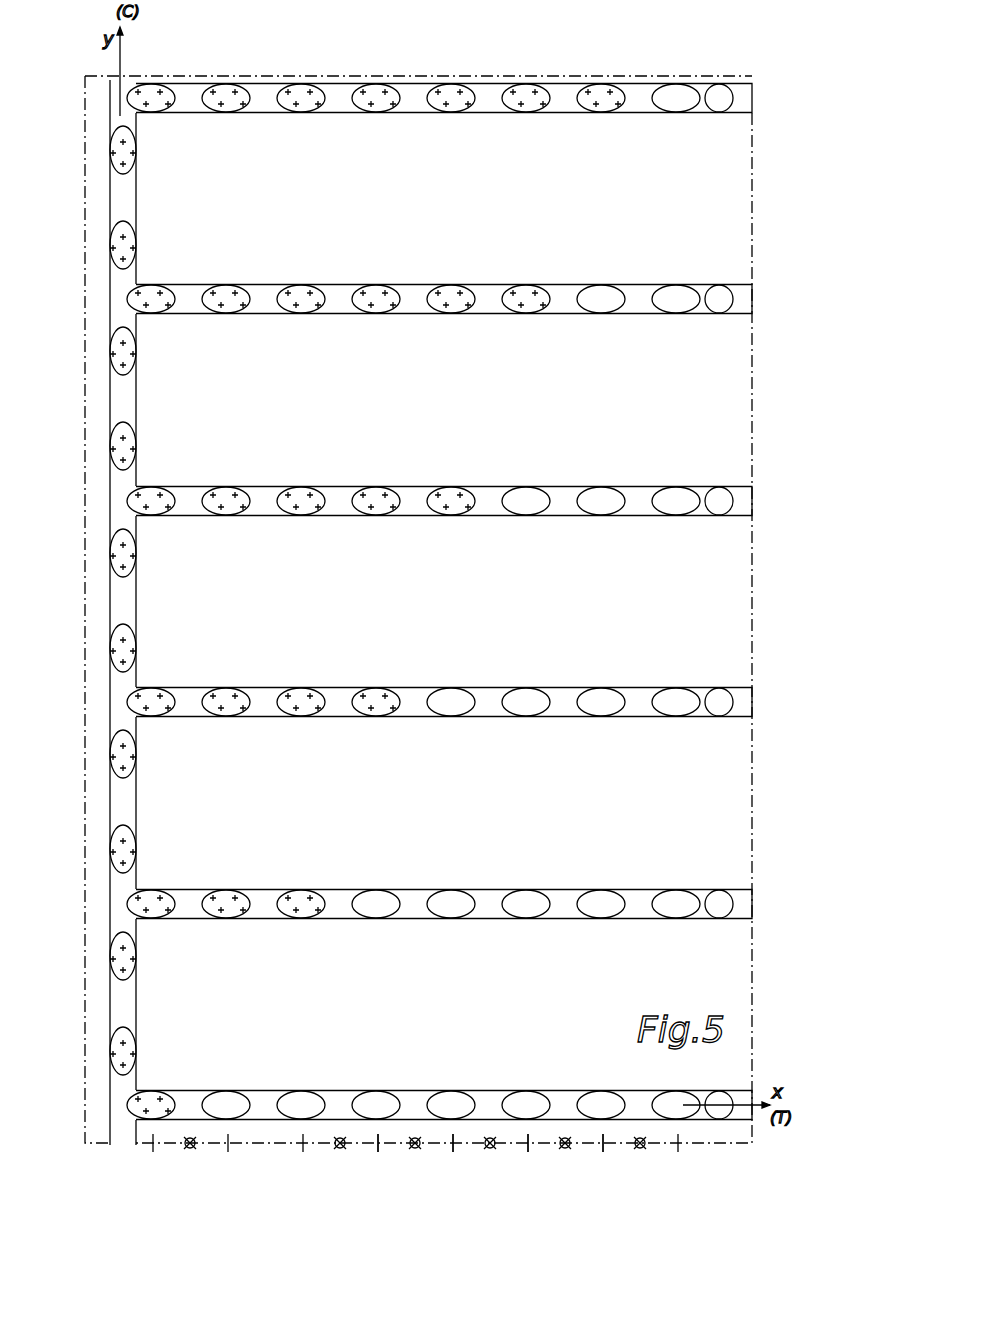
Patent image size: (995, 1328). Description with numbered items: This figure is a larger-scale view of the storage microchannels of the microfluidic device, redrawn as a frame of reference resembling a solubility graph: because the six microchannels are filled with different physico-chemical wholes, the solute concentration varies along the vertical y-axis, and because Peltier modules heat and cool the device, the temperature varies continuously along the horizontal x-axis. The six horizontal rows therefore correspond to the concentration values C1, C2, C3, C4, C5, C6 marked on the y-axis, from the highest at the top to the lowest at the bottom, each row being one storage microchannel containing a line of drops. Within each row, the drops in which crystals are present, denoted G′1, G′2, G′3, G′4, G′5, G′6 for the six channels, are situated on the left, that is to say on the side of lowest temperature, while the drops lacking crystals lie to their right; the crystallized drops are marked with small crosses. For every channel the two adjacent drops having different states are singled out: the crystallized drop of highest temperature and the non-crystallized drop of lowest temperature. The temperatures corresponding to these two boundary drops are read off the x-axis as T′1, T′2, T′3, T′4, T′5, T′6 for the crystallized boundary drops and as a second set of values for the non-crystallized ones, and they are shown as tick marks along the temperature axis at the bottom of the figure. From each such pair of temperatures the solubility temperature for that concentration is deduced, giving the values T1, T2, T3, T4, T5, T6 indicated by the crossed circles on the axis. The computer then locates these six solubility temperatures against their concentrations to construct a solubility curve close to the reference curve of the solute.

The concentration value C1 is at (106, 98).
The concentration value C2 is at (106, 299).
The concentration value C3 is at (106, 501).
The concentration value C4 is at (106, 702).
The concentration value C5 is at (106, 904).
The concentration value C6 is at (106, 1105).
The drops in which crystals are present G′1 is at (376, 97).
The drops in which crystals are present G′2 is at (357, 298).
The drops in which crystals are present G′3 is at (301, 500).
The drops in which crystals are present G′4 is at (263, 701).
The drops in which crystals are present G′5 is at (226, 904).
The drops in which crystals are present G′6 is at (185, 1065).
The solubility temperature T1 is at (641, 1158).
The solubility temperature T2 is at (566, 1158).
The solubility temperature T3 is at (491, 1158).
The solubility temperature T4 is at (416, 1158).
The solubility temperature T5 is at (341, 1158).
The solubility temperature T6 is at (191, 1158).
The temperature of the highest-temperature crystallized drop T′1 is at (604, 1179).
The temperature of the highest-temperature crystallized drop T′2 is at (529, 1179).
The temperature of the highest-temperature crystallized drop T′3 is at (454, 1179).
The temperature of the highest-temperature crystallized drop T′4 is at (379, 1179).
The temperature of the highest-temperature crystallized drop T′5 is at (304, 1179).
The temperature of the highest-temperature crystallized drop T′6 is at (154, 1179).